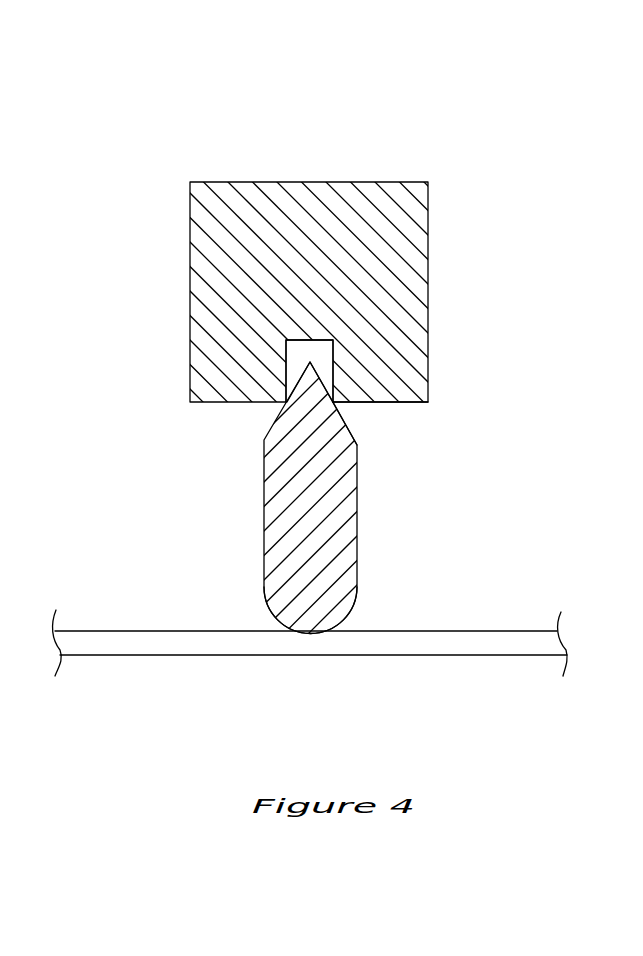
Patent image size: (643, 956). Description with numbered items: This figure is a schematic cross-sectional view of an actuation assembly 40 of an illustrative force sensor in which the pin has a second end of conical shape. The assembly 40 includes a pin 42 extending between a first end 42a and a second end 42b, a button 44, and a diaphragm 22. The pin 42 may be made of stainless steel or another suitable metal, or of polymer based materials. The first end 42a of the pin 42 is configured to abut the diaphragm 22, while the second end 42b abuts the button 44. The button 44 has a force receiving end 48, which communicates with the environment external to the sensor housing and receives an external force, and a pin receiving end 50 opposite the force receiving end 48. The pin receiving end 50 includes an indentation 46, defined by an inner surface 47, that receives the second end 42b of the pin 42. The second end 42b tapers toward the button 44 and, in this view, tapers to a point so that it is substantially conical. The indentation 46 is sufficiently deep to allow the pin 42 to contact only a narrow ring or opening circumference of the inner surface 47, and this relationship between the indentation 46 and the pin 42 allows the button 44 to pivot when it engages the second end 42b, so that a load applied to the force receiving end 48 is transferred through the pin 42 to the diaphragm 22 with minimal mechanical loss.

The pin assembly 40 is at (321, 393).
The button 44 is at (232, 182).
The inner surface 47 is at (288, 354).
The indentation 46 is at (288, 403).
The pin 42 is at (264, 517).
The first end 42a is at (363, 615).
The second end 42b is at (353, 412).
The force receiving end 48 is at (320, 132).
The pin receiving end 50 is at (390, 412).
The diaphragm 22 is at (155, 631).